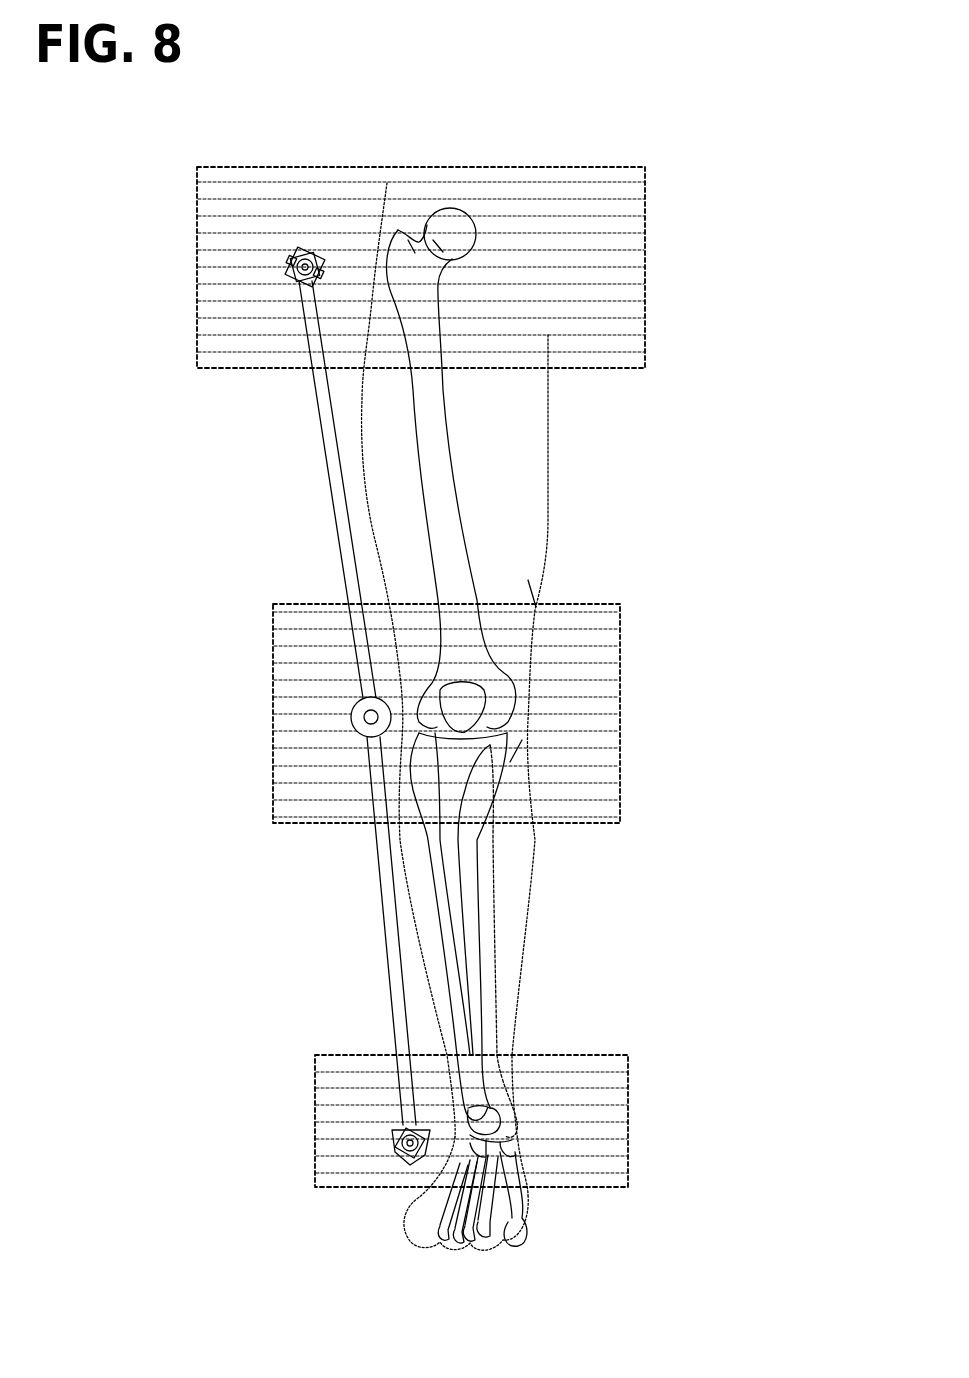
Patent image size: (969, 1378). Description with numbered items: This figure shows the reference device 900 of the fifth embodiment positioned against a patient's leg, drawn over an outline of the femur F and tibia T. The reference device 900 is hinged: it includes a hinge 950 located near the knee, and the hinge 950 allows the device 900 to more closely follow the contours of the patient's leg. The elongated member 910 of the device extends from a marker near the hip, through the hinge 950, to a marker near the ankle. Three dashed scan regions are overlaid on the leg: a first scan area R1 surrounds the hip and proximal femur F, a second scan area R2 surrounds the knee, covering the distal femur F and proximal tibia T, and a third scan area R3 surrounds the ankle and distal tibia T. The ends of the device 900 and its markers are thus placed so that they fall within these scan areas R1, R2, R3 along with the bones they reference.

The first scan area R1 is at (668, 192).
The second scan area R2 is at (644, 661).
The third scan area R3 is at (651, 1126).
The femur F is at (415, 411).
The tibia T is at (493, 880).
The reference device 900 is at (270, 471).
The reference rod with sensors 910 is at (336, 958).
The hinge 950 is at (351, 717).